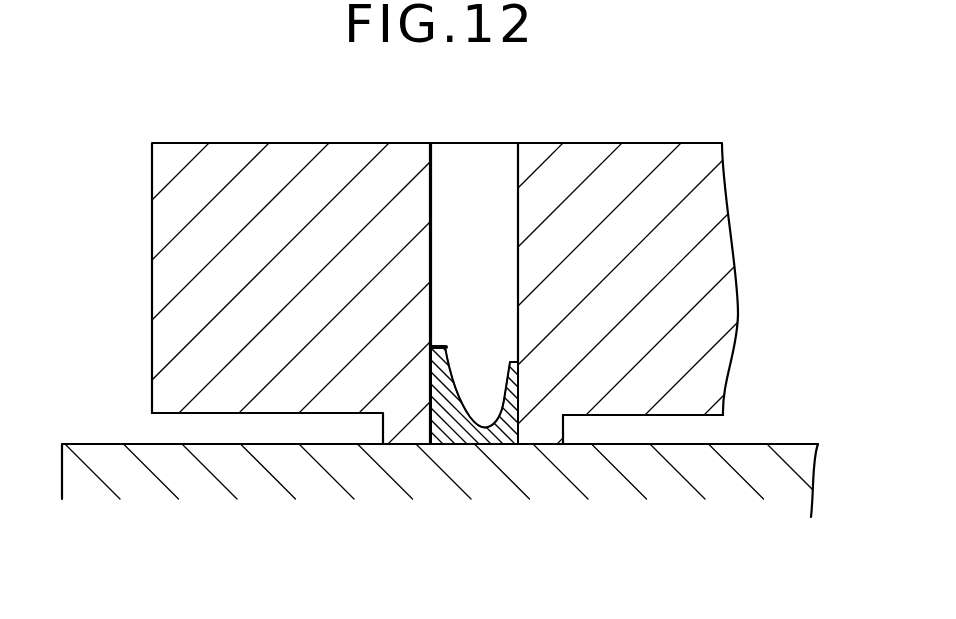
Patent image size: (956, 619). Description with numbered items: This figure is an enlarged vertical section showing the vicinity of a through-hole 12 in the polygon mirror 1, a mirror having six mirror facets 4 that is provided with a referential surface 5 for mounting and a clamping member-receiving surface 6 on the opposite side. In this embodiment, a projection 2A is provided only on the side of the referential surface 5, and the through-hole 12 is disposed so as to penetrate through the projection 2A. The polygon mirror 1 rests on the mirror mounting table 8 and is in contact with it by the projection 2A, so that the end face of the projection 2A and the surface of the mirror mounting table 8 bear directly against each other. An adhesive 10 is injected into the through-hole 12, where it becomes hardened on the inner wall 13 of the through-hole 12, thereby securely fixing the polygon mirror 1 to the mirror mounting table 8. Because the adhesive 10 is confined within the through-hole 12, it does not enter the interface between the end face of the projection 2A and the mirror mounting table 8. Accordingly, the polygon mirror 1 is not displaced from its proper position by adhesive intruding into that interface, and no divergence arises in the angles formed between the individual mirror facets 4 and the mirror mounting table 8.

The polygon mirror 1 is at (250, 151).
The projection 2A is at (560, 427).
The mirror facets 4 is at (351, 275).
The referential surface 5 is at (181, 418).
The clamping member-receiving surface 6 is at (594, 143).
The mirror mounting table 8 is at (100, 444).
The adhesive 10 is at (507, 432).
The through-hole 12 is at (492, 152).
The inner wall 13 is at (470, 427).